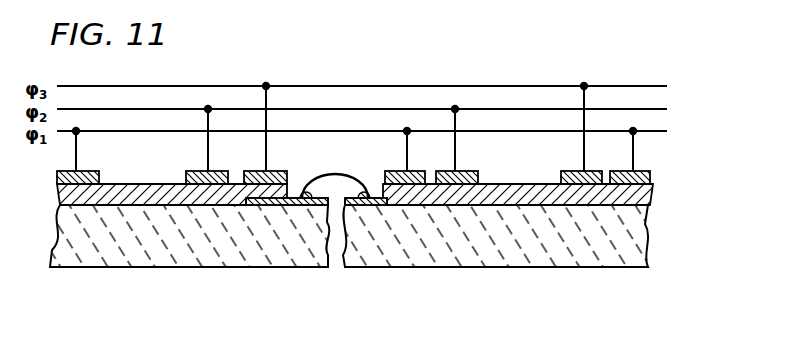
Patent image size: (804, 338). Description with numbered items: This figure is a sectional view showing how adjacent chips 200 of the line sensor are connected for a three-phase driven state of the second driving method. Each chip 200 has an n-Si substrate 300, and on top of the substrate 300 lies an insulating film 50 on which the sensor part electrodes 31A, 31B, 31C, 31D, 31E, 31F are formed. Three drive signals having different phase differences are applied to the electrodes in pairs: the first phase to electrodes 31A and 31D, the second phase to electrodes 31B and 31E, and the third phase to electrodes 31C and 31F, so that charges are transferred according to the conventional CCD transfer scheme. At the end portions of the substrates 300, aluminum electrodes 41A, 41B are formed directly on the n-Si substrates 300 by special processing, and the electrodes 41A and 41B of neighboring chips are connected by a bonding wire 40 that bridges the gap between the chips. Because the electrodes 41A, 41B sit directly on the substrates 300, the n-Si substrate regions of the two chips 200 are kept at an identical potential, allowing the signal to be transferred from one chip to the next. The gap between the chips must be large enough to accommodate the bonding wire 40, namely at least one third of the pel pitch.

The sensor part electrode 31A is at (96, 170).
The sensor part electrode 31B is at (216, 170).
The sensor part electrode 31C is at (278, 170).
The sensor part electrode 31D is at (411, 170).
The sensor part electrode 31E is at (470, 170).
The sensor part electrode 31F is at (588, 170).
The bonding wire 40 is at (340, 173).
The aluminum electrode 41A is at (258, 206).
The aluminum electrode 41B is at (372, 207).
The insulating film 50 is at (62, 204).
The chip 200 is at (353, 191).
The n-Si substrate 300 is at (148, 257).